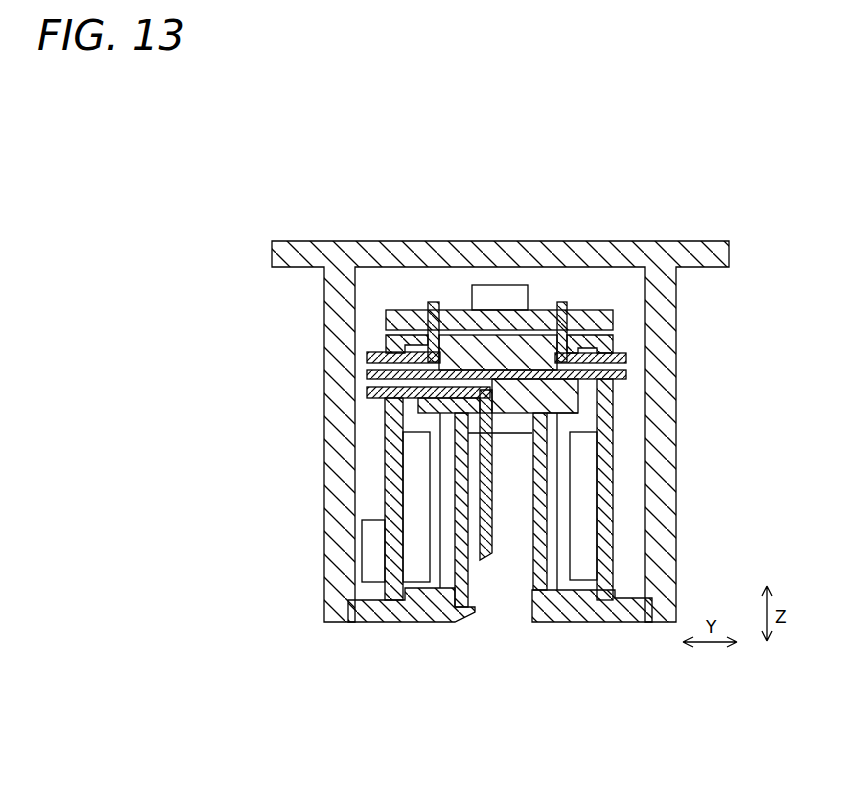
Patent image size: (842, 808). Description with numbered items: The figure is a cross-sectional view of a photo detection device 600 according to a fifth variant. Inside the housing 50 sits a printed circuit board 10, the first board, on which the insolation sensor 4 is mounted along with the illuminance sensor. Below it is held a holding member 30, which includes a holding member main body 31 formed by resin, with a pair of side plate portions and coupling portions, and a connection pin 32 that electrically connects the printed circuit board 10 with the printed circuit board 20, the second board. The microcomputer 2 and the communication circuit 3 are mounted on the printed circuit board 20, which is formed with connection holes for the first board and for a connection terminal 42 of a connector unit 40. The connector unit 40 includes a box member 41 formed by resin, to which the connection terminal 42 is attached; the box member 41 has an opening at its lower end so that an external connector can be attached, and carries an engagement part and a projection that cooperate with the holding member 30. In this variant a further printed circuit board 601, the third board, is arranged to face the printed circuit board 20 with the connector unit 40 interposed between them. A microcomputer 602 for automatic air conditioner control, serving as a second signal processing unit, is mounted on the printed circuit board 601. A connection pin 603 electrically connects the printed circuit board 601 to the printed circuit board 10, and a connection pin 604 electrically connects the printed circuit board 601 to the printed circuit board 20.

The photo detection device 600 is at (508, 192).
The housing 50 is at (336, 241).
The printed circuit board 10 is at (408, 310).
The holding member main body 31 is at (445, 336).
The insolation sensor 4 is at (493, 296).
The holding member 30 is at (540, 345).
The connection pin 32 is at (368, 357).
The connection terminal 42 is at (368, 390).
The printed circuit board 20 is at (392, 450).
The microcomputer 2 is at (412, 498).
The communication circuit 3 is at (372, 555).
The connector unit 40 is at (462, 607).
The box member 41 is at (540, 597).
The connection pin 603 is at (627, 355).
The connection pin 604 is at (627, 374).
The printed circuit board 601 is at (608, 450).
The microcomputer 602 is at (585, 498).